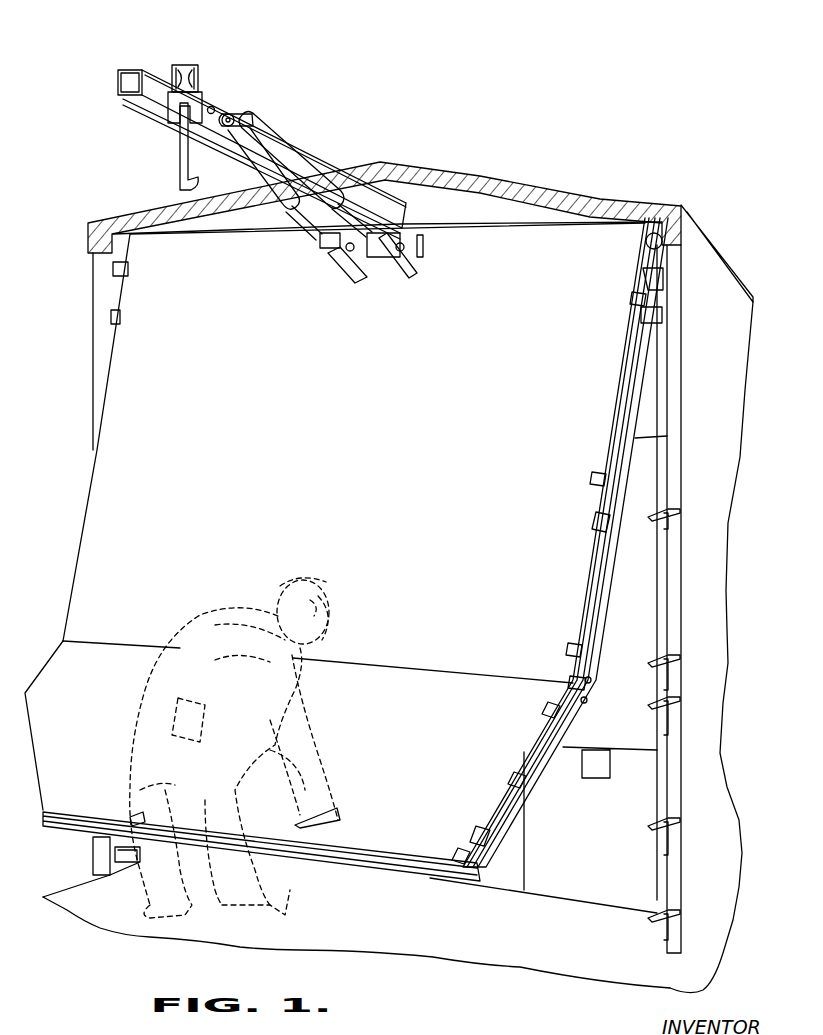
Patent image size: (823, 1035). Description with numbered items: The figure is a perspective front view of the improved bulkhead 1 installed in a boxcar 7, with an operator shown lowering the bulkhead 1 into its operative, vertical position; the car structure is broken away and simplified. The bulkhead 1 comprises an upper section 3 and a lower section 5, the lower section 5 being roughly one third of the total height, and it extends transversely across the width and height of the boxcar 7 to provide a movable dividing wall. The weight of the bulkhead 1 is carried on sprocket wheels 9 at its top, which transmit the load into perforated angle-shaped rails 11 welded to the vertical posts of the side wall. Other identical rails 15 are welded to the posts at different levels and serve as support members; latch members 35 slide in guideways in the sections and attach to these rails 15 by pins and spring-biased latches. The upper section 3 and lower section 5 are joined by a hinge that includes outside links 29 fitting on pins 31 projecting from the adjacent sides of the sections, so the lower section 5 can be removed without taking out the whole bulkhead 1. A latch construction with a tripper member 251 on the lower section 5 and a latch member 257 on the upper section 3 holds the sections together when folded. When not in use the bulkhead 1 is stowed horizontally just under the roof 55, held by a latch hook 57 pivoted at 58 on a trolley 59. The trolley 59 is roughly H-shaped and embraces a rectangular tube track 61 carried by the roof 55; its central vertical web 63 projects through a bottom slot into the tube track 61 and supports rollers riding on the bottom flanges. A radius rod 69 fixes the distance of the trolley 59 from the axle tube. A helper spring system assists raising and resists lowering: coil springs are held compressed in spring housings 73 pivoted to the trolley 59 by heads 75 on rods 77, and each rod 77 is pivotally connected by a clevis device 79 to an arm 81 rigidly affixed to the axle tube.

The bulkhead 1 is at (592, 233).
The upper section 3 is at (514, 392).
The lower section 5 is at (398, 775).
The boxcar 7 is at (590, 188).
The sprocket wheels 9 is at (668, 243).
The rails 11 is at (664, 281).
The rails 15 is at (668, 523).
The outside links 29 is at (576, 680).
The pins 31 is at (590, 680).
The latch members 35 is at (636, 297).
The roof 55 is at (518, 202).
The latch hook 57 is at (180, 160).
The pivot 58 is at (215, 108).
The trolley 59 is at (206, 95).
The rectangular tube track 61 is at (178, 76).
The central vertical web 63 is at (181, 67).
The radius rod 69 is at (350, 199).
The spring housings 73 is at (300, 173).
The heads 75 is at (236, 117).
The rods 77 is at (310, 226).
The clevis device 79 is at (333, 247).
The arm 81 is at (358, 263).
The tripper member 251 is at (480, 837).
The latch member 257 is at (600, 521).